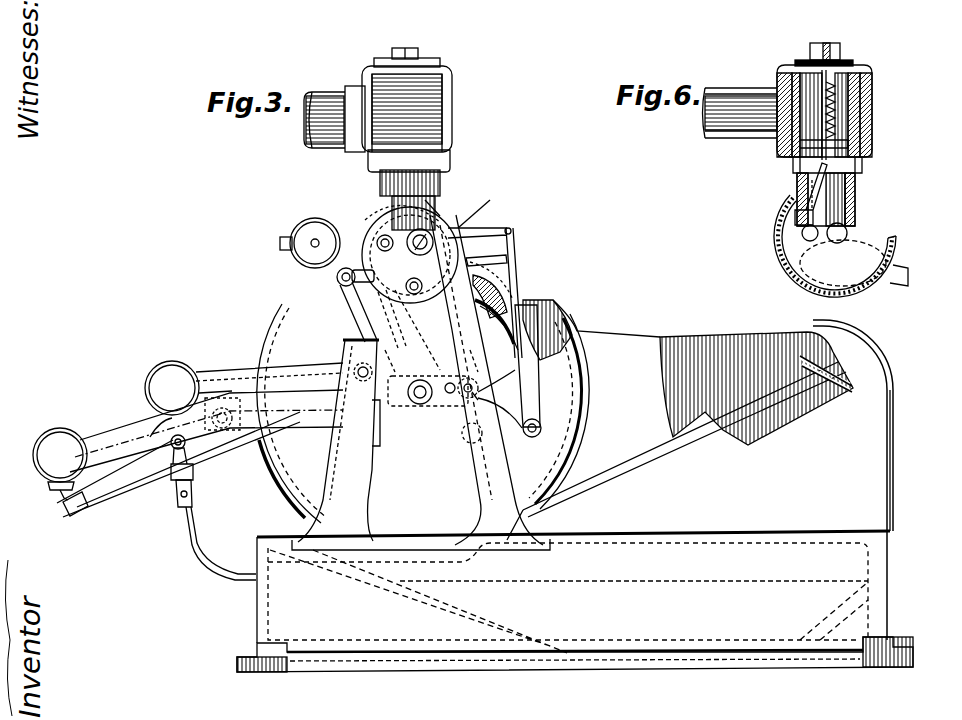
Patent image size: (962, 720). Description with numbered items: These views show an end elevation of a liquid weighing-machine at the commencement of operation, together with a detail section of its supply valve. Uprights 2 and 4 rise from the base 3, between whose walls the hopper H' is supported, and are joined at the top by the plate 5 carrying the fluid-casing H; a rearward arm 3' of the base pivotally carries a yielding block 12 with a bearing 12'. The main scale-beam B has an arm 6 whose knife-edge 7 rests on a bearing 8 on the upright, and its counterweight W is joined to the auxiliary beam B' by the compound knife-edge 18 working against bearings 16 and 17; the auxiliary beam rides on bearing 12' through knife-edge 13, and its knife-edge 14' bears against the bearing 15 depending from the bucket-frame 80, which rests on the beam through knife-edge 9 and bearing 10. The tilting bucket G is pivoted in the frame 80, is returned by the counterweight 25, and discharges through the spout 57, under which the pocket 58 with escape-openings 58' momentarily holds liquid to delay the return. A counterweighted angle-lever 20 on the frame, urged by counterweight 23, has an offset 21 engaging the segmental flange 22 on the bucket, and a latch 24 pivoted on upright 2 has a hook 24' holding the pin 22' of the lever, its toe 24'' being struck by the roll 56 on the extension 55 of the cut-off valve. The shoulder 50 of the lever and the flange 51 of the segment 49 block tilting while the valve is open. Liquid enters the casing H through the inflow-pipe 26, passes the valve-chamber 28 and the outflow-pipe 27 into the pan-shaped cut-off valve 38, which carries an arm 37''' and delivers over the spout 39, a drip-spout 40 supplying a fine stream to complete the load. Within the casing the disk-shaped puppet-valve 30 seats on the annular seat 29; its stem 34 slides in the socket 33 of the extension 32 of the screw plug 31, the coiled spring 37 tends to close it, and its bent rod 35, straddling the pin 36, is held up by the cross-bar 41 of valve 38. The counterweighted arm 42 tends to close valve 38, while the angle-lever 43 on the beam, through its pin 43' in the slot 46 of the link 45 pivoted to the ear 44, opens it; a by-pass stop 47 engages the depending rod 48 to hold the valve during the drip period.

In FIG. 3, the upright 2 is at (336, 462).
In FIG. 3, the base 3 is at (575, 496).
In FIG. 3, the rearwardly-extending arm of the base 3' is at (210, 543).
In FIG. 3, the upright 4 is at (382, 192).
In FIG. 3, the beam or plate 5 is at (446, 142).
In FIG. 3, the arm of the main scale-beam 6 is at (135, 430).
In FIG. 3, the pivot or knife-edge 7 is at (368, 396).
In FIG. 3, the V-shaped bearing 8 is at (380, 425).
In FIG. 3, the pivot or knife-edge 9 is at (474, 396).
In FIG. 3, the V-shaped bearing 10 is at (468, 380).
In FIG. 3, the yieldingly-supported block 12 is at (195, 464).
In FIG. 3, the beam support or bearing 12' is at (169, 484).
In FIG. 3, the pivot or knife-edge 13 is at (170, 441).
In FIG. 3, the pivot block 14' is at (250, 413).
In FIG. 3, the bearing 15 is at (222, 400).
In FIG. 3, the bearing 16 is at (56, 487).
In FIG. 3, the complemental bearing 17 is at (70, 514).
In FIG. 3, the compound knife-edge 18 is at (62, 499).
In FIG. 3, the counterweighted angle-lever 20 is at (530, 394).
In FIG. 3, the offset detent 21 is at (516, 374).
In FIG. 3, the detent 22 is at (591, 324).
In FIG. 3, the projection or pin 22' is at (514, 271).
In FIG. 3, the counterweight 23 is at (466, 438).
In FIG. 3, the bucket-latch 24 is at (485, 274).
In FIG. 3, the hook 24' is at (511, 244).
In FIG. 3, the rod 24'' is at (436, 330).
In FIG. 3, the counterweight 25 is at (278, 476).
In FIG. 3, the inflow conduit or pipe 26 is at (336, 93).
In FIG. 6, the inflow conduit or pipe 26 is at (732, 138).
In FIG. 3, the outflow-pipe 27 is at (432, 205).
In FIG. 6, the outflow-pipe 27 is at (852, 196).
In FIG. 6, the valve-chamber 28 is at (871, 72).
In FIG. 6, the annular valve-seat 29 is at (866, 162).
In FIG. 6, the puppet-valve 30 is at (792, 164).
In FIG. 3, the screw-threaded plug 31 is at (418, 66).
In FIG. 6, the screw-threaded plug 31 is at (842, 62).
In FIG. 6, the downward extension 32 is at (815, 100).
In FIG. 6, the central socket 33 is at (824, 60).
In FIG. 6, the stem 34 is at (800, 80).
In FIG. 6, the depending bent rod or bar 35 is at (806, 194).
In FIG. 6, the pin 36 is at (800, 222).
In FIG. 6, the spring-actuator 37 is at (859, 115).
In FIG. 6, the roller 37''' is at (866, 224).
In FIG. 3, the cut-off valve 38 is at (378, 216).
In FIG. 6, the cut-off valve 38 is at (806, 284).
In FIG. 3, the main-stream valve-spout 39 is at (512, 300).
In FIG. 6, the main-stream valve-spout 39 is at (908, 284).
In FIG. 6, the drip-spout 40 is at (806, 240).
In FIG. 3, the cross-bar 41 is at (377, 247).
In FIG. 3, the counterweighted arm 42 is at (280, 241).
In FIG. 3, the shiftable counterweighted lever 43 is at (269, 359).
In FIG. 3, the laterally-projecting pin 43' is at (331, 281).
In FIG. 3, the lug or ear 44 is at (438, 215).
In FIG. 3, the link 45 is at (388, 296).
In FIG. 3, the longitudinal slot 46 is at (350, 292).
In FIG. 3, the by-pass stop 47 is at (440, 362).
In FIG. 3, the depending rod 48 is at (392, 340).
In FIG. 3, the segment 49 is at (478, 232).
In FIG. 3, the supplemental stop 50 is at (510, 230).
In FIG. 3, the flange 51 is at (512, 282).
In FIG. 3, the extension 55 is at (430, 257).
In FIG. 3, the antifriction-roll 56 is at (414, 295).
In FIG. 3, the discharge-spout 57 is at (648, 433).
In FIG. 3, the open-ended pocket 58 is at (756, 398).
In FIG. 3, the escape-openings 58' is at (827, 395).
In FIG. 3, the bucket-frame or yoke 80 is at (248, 372).
In FIG. 3, the main scale-beam B is at (206, 431).
In FIG. 3, the auxiliary scale-beam B' is at (178, 467).
In FIG. 3, the bucket G is at (290, 345).
In FIG. 3, the fluid-casing H is at (418, 105).
In FIG. 6, the fluid-casing H is at (881, 91).
In FIG. 3, the hopper H' is at (426, 627).
In FIG. 3, the combined counterweight and connecting-shaft W is at (36, 458).